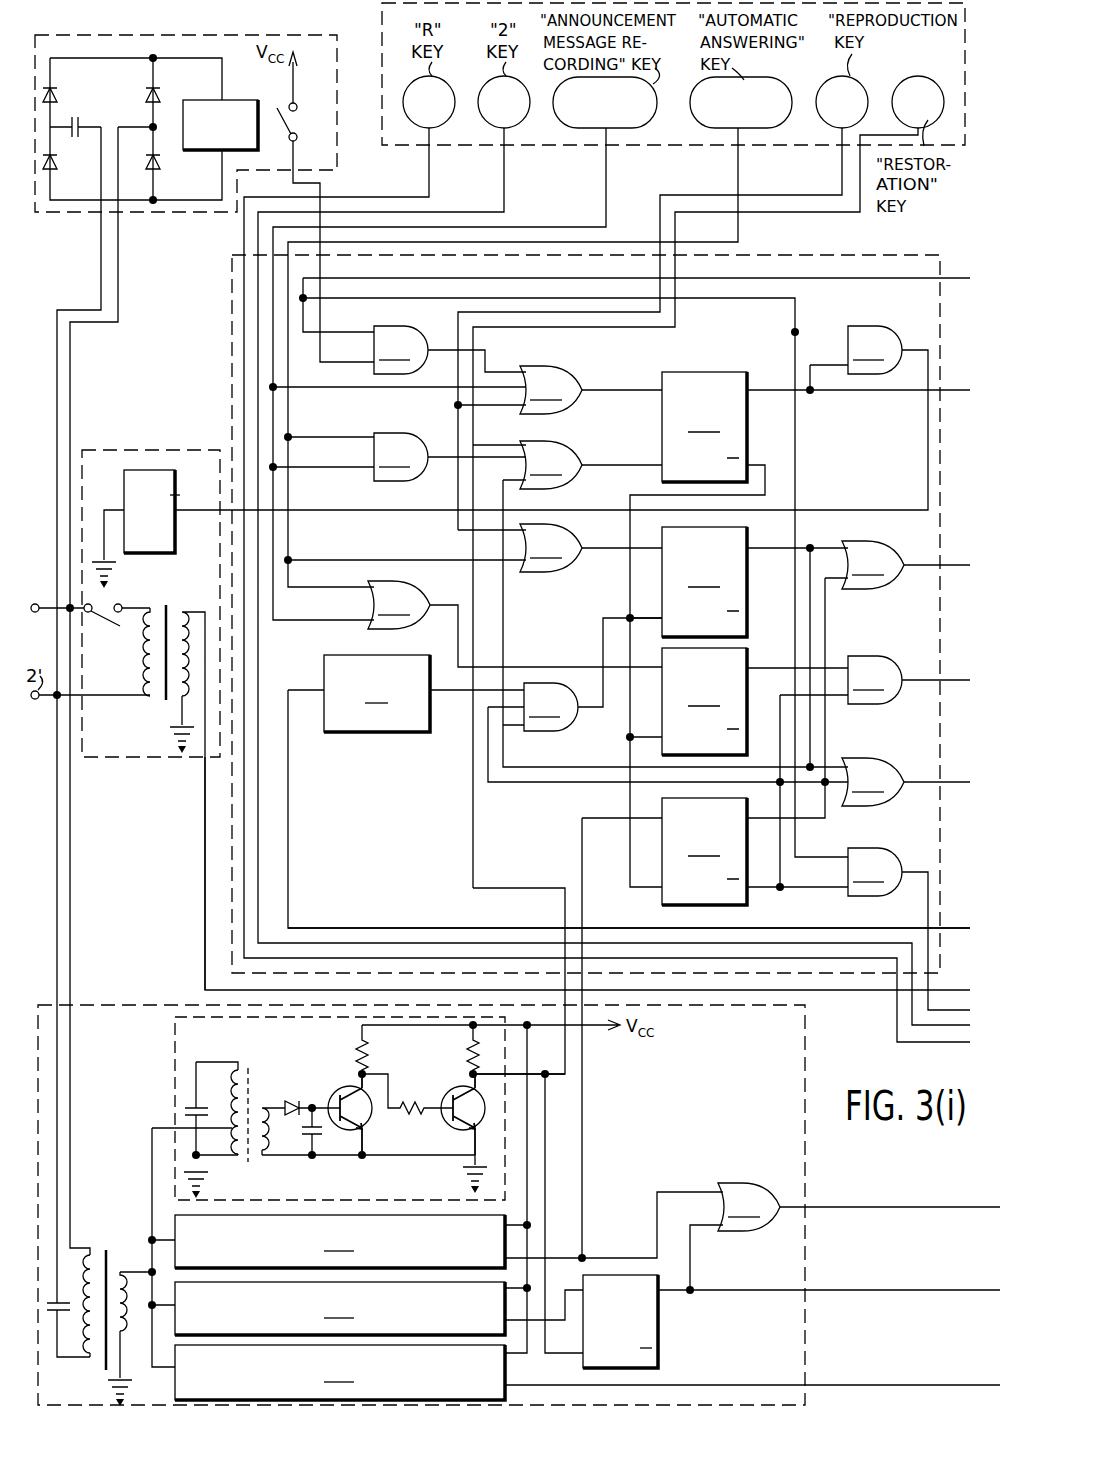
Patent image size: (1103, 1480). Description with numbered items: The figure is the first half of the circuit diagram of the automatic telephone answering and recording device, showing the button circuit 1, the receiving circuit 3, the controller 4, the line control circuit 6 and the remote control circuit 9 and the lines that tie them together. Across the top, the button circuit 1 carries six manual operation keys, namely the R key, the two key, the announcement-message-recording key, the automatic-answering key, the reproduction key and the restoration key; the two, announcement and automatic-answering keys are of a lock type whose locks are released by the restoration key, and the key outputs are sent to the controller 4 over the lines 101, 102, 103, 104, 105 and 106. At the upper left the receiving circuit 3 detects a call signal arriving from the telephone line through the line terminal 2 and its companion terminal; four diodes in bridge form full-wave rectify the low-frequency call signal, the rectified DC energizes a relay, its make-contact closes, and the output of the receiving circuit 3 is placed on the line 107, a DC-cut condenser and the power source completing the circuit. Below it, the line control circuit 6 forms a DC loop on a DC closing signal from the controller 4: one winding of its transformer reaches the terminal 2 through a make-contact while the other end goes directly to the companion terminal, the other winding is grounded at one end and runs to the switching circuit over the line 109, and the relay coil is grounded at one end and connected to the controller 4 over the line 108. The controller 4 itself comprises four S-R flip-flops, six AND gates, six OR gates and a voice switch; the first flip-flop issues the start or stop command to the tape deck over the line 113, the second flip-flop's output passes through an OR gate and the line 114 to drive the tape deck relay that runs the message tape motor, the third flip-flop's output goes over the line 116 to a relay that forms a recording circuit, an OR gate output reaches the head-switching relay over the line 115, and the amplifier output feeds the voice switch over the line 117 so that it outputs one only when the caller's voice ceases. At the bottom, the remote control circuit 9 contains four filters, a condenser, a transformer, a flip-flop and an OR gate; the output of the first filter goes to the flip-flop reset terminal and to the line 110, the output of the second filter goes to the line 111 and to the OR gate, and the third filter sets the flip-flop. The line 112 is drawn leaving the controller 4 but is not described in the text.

The button circuit 1 is at (380, 36).
The line terminal 2 is at (38, 604).
The receiving circuit 3 is at (216, 36).
The controller 4 is at (220, 857).
The line control circuit 6 is at (154, 450).
The remote control circuit 9 is at (808, 1050).
The line 101 is at (429, 184).
The line 102 is at (504, 184).
The line 103 is at (606, 182).
The line 104 is at (738, 176).
The line 105 is at (842, 161).
The line 106 is at (850, 176).
The line 107 is at (320, 186).
The line 108 is at (200, 515).
The line 109 is at (204, 757).
The line 110 is at (564, 908).
The line 111 is at (582, 908).
The output line 112 is at (874, 280).
The line 113 is at (866, 396).
The line 114 is at (926, 560).
The line 115 is at (928, 780).
The line 116 is at (928, 678).
The line 117 is at (956, 926).